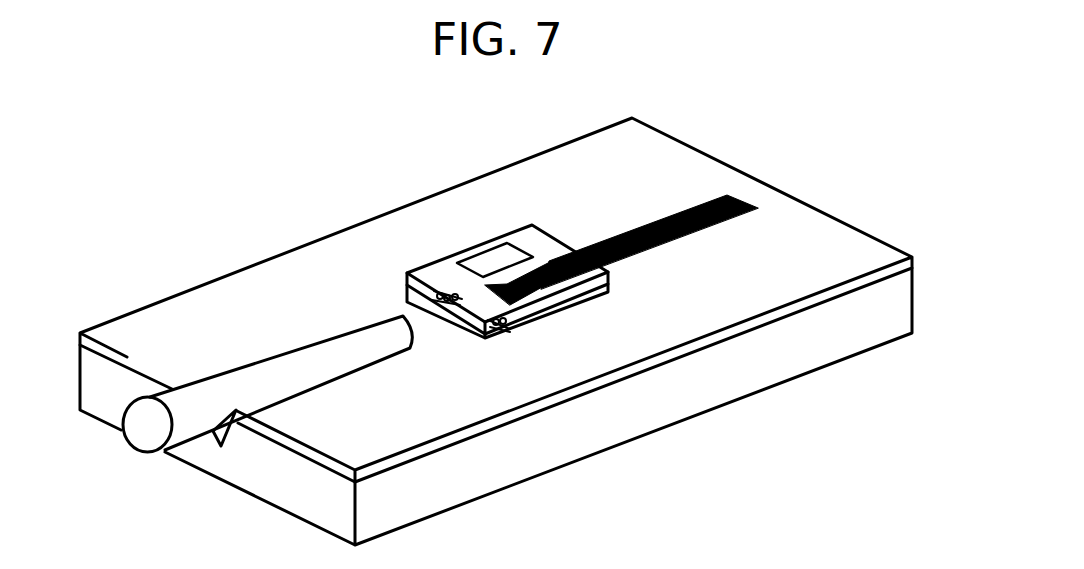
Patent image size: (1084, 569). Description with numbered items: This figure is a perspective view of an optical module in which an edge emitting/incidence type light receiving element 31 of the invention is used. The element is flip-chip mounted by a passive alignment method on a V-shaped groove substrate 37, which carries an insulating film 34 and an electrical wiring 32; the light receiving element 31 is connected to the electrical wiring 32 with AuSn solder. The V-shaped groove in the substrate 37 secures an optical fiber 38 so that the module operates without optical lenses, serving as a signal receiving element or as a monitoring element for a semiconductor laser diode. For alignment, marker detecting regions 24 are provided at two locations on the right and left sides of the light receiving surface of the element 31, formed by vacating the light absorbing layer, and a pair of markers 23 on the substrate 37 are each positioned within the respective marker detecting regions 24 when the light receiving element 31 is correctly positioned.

The markers 23 is at (405, 285).
The marker detecting regions 24 is at (440, 290).
The edge emitting/incidence type light receiving element 31 is at (523, 240).
The electrical wiring 32 is at (695, 208).
The insulating film 34 is at (640, 368).
The V-shaped groove substrate 37 is at (520, 448).
The optical fiber 38 is at (288, 345).